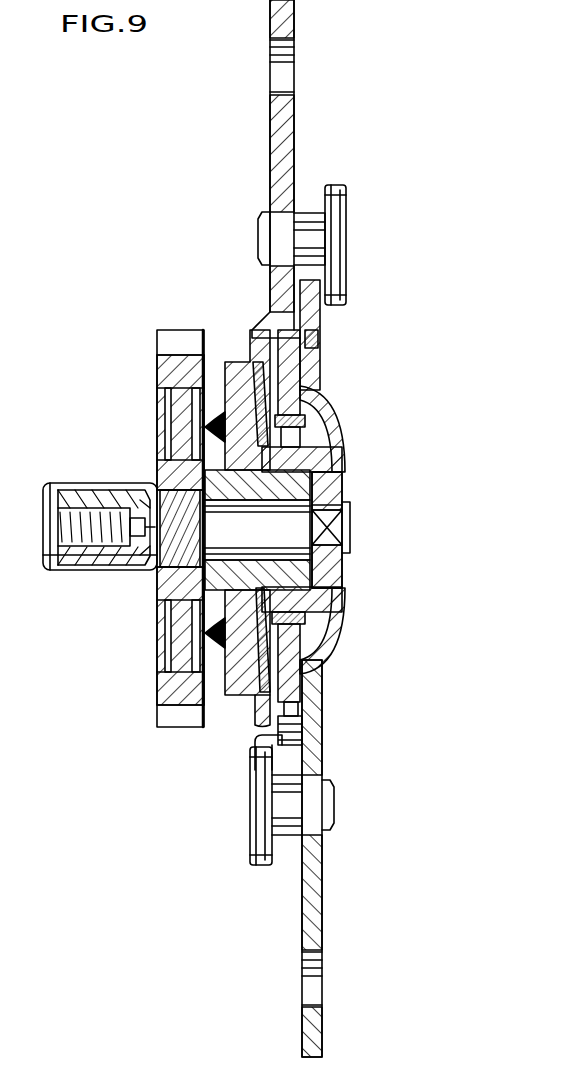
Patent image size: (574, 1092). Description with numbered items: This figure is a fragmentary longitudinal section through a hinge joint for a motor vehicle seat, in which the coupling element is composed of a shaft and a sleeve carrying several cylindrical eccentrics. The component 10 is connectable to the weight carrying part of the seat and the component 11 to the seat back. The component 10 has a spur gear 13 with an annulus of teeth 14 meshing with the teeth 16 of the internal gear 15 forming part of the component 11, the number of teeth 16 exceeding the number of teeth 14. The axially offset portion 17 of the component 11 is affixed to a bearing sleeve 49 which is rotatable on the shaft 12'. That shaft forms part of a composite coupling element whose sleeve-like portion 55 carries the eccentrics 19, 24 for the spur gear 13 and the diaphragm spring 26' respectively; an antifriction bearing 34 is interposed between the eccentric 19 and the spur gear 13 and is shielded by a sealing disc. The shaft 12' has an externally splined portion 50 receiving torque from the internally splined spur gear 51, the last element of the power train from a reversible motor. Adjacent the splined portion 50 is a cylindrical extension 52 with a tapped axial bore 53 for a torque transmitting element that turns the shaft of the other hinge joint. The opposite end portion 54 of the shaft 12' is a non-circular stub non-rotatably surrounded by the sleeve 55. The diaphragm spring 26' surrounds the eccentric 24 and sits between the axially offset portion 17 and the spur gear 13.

The component 10 is at (312, 908).
The component 11 is at (283, 131).
The shaft 12' is at (382, 519).
The spur gear 13 is at (292, 371).
The teeth 14 is at (292, 710).
The internal gear 15 is at (305, 746).
The teeth 16 is at (322, 726).
The axially offset portion 17 is at (235, 402).
The eccentric 19 is at (302, 455).
The eccentric 24 is at (267, 600).
The diaphragm spring 26' is at (220, 736).
The antifriction bearing 34 is at (282, 619).
The bearing sleeve 49 is at (222, 480).
The externally splined portion 50 is at (160, 601).
The spur gear 51 is at (176, 685).
The cylindrical extension 52 is at (145, 573).
The tapped axial bore 53 is at (78, 482).
The end portion 54 is at (332, 528).
The sleeve-like portion 55 is at (337, 572).